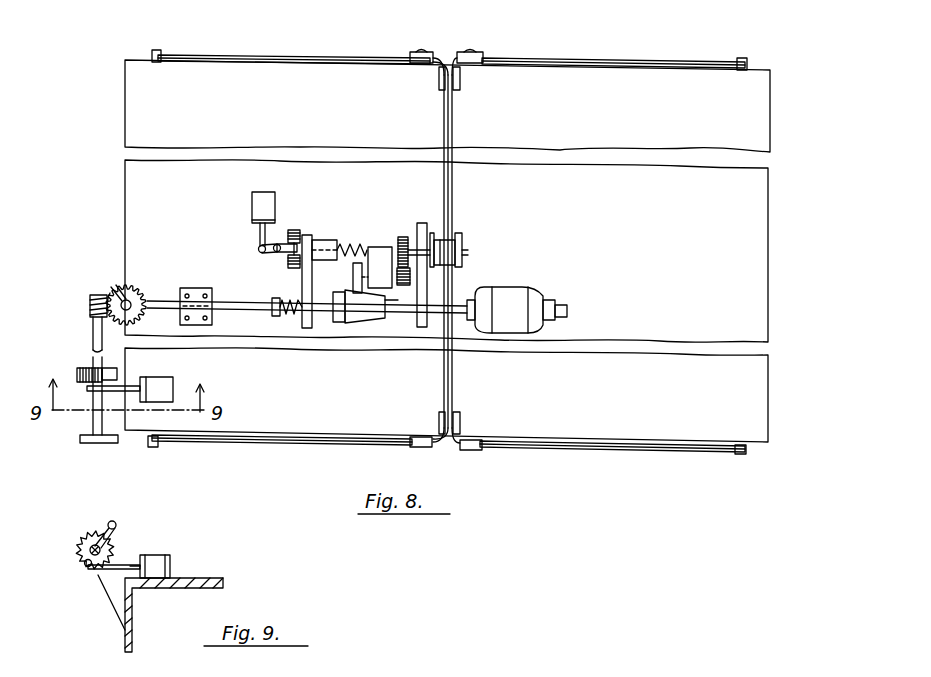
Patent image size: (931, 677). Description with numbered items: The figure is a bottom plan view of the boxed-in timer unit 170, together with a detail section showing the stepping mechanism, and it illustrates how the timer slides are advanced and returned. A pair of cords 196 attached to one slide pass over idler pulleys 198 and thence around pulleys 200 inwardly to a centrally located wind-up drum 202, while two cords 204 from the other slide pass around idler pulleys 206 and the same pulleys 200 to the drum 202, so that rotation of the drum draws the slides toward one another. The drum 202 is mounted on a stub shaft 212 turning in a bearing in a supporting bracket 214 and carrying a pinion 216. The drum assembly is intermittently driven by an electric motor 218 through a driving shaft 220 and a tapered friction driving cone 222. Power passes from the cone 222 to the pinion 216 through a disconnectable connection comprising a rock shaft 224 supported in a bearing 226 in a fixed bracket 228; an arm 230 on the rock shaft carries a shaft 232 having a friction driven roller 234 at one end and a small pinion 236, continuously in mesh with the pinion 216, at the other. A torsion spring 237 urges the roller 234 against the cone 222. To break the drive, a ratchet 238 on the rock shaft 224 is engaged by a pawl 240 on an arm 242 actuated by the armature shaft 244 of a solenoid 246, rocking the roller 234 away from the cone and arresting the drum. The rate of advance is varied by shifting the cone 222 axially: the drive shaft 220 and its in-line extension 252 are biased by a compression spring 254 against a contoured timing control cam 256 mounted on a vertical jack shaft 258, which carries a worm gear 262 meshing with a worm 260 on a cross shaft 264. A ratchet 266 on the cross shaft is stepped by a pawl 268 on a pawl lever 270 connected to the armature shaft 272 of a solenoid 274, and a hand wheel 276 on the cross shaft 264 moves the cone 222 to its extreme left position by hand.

In FIG. 8, the timer unit 170 is at (123, 111).
In FIG. 9, the timer unit 170 is at (193, 594).
In FIG. 8, the cords 196 is at (302, 55).
In FIG. 8, the idler pulleys 198 is at (425, 52).
In FIG. 8, the pulleys 200 is at (438, 80).
In FIG. 8, the wind-up drum 202 is at (463, 240).
In FIG. 8, the cords 204 is at (627, 60).
In FIG. 8, the idler pulleys 206 is at (478, 58).
In FIG. 8, the stub shaft 212 is at (450, 235).
In FIG. 8, the supporting bracket 214 is at (422, 328).
In FIG. 8, the pinion 216 is at (403, 237).
In FIG. 8, the electric motor 218 is at (527, 304).
In FIG. 8, the driving shaft 220 is at (457, 314).
In FIG. 8, the friction driving cone 222 is at (355, 323).
In FIG. 8, the rock shaft 224 is at (341, 248).
In FIG. 8, the bearing 226 is at (323, 240).
In FIG. 8, the fixed bracket 228 is at (307, 330).
In FIG. 8, the arm 230 is at (384, 247).
In FIG. 8, the shaft 232 is at (392, 302).
In FIG. 8, the friction driven roller 234 is at (356, 276).
In FIG. 8, the small pinion 236 is at (410, 282).
In FIG. 8, the torsion spring 237 is at (368, 247).
In FIG. 8, the ratchet 238 is at (293, 230).
In FIG. 8, the pawl 240 is at (290, 262).
In FIG. 8, the arm 242 is at (259, 249).
In FIG. 8, the armature shaft 244 is at (254, 232).
In FIG. 8, the solenoid 246 is at (268, 190).
In FIG. 8, the extension 252 is at (251, 312).
In FIG. 8, the compression spring 254 is at (276, 300).
In FIG. 8, the timing control cam 256 is at (131, 290).
In FIG. 8, the vertical jack shaft 258 is at (115, 290).
In FIG. 8, the worm 260 is at (86, 302).
In FIG. 8, the worm gear 262 is at (108, 292).
In FIG. 8, the cross shaft 264 is at (92, 326).
In FIG. 9, the cross shaft 264 is at (84, 563).
In FIG. 8, the ratchet 266 is at (82, 366).
In FIG. 9, the ratchet 266 is at (80, 536).
In FIG. 8, the pawl 268 is at (117, 372).
In FIG. 9, the pawl 268 is at (114, 522).
In FIG. 8, the pawl lever 270 is at (90, 390).
In FIG. 9, the pawl lever 270 is at (118, 532).
In FIG. 9, the armature shaft 272 is at (130, 562).
In FIG. 8, the solenoid 274 is at (166, 389).
In FIG. 9, the solenoid 274 is at (165, 568).
In FIG. 8, the hand wheel 276 is at (98, 444).